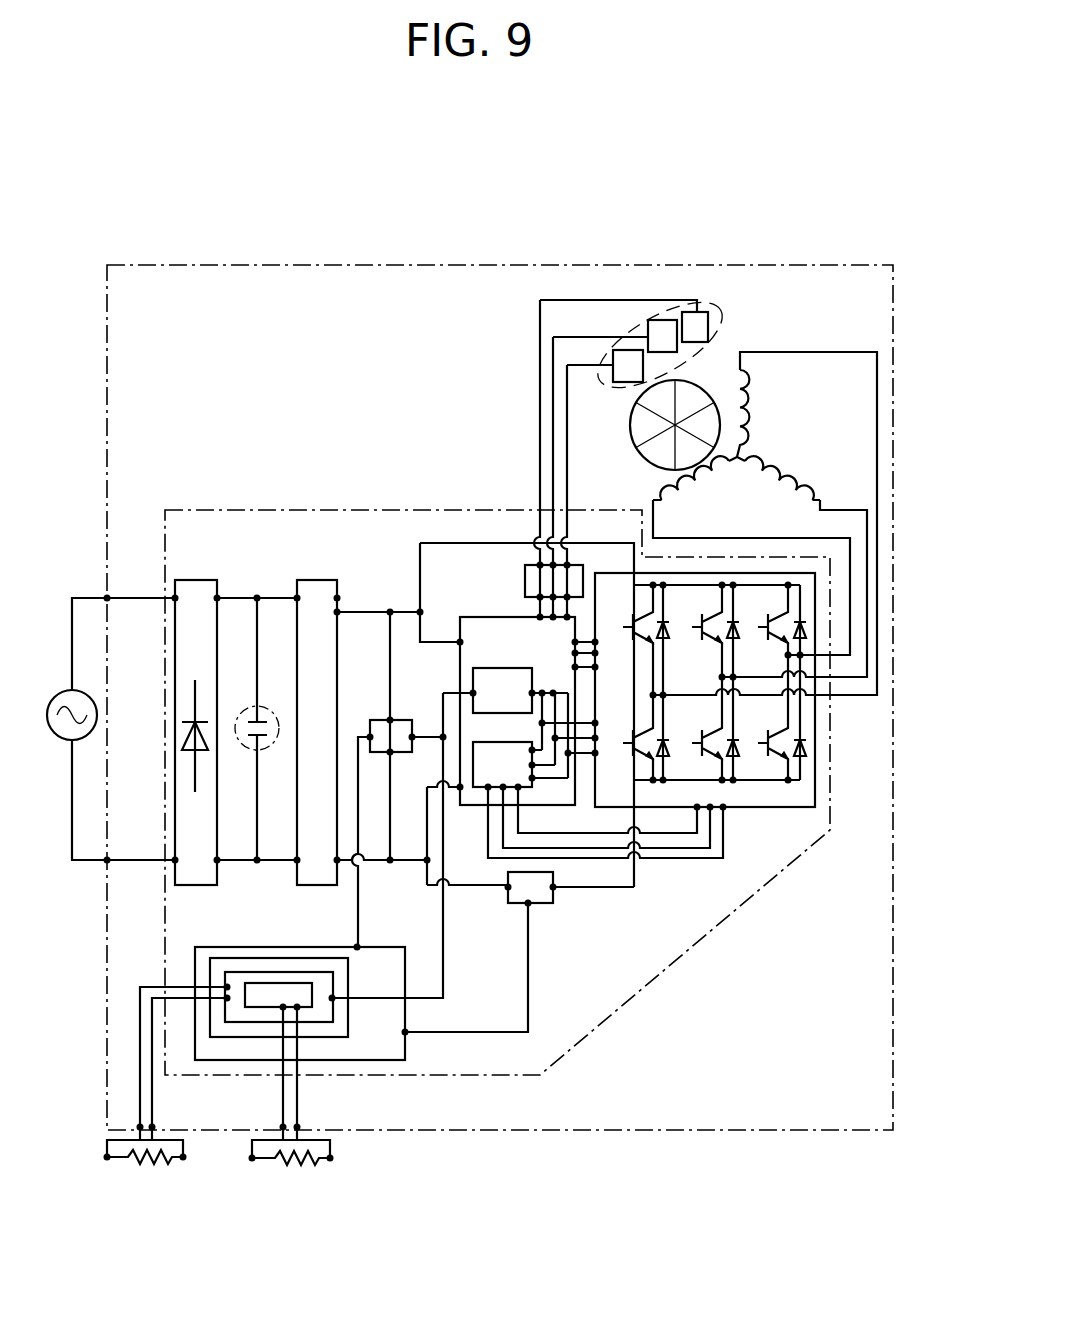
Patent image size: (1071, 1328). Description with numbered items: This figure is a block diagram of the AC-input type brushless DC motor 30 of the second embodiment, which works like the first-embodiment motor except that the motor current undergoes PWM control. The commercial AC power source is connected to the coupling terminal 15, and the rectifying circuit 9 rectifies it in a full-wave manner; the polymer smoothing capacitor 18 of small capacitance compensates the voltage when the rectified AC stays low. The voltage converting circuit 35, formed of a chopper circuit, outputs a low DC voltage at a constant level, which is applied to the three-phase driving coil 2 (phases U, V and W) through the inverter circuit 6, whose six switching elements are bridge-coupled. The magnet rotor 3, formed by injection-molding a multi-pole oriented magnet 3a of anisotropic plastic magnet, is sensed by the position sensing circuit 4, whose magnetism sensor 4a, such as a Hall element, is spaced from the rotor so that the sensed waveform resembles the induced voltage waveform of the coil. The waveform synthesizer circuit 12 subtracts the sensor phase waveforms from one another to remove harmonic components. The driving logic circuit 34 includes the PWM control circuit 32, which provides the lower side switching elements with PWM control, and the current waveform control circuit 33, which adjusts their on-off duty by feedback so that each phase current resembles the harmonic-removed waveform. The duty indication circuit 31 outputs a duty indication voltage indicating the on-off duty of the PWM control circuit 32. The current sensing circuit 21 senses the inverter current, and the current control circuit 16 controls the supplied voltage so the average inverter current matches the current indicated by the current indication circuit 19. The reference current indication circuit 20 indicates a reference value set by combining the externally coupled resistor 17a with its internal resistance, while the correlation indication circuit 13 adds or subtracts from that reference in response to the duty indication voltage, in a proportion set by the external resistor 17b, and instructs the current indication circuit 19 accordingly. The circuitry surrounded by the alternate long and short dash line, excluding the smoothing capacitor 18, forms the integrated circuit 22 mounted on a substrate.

The AC-input type brushless DC motor 30 is at (328, 262).
The integrated circuit 22 is at (200, 508).
The coupling terminal 15 is at (105, 592).
The rectifying circuit 9 is at (195, 578).
The smoothing capacitor 18 is at (251, 705).
The voltage converting circuit 35 is at (305, 578).
The duty indication circuit 31 is at (378, 719).
The waveform synthesizer circuit 12 is at (530, 565).
The PWM control circuit 32 is at (568, 707).
The current waveform control circuit 33 is at (509, 760).
The driving logic circuit 34 is at (567, 795).
The current sensing circuit 21 is at (548, 912).
The current control circuit 16 is at (318, 1042).
The current indication circuit 19 is at (348, 1023).
The correlation indication circuit 13 is at (232, 1023).
The reference current indication circuit 20 is at (273, 1008).
The resistor 17a is at (288, 1163).
The resistor 17b is at (143, 1160).
The inverter circuit 6 is at (820, 770).
The driving coil 2 is at (727, 478).
The magnet rotor 3 is at (645, 443).
The multi-pole oriented magnet 3a is at (635, 442).
The position sensing circuit 4 is at (676, 338).
The magnetism sensor 4a is at (710, 308).